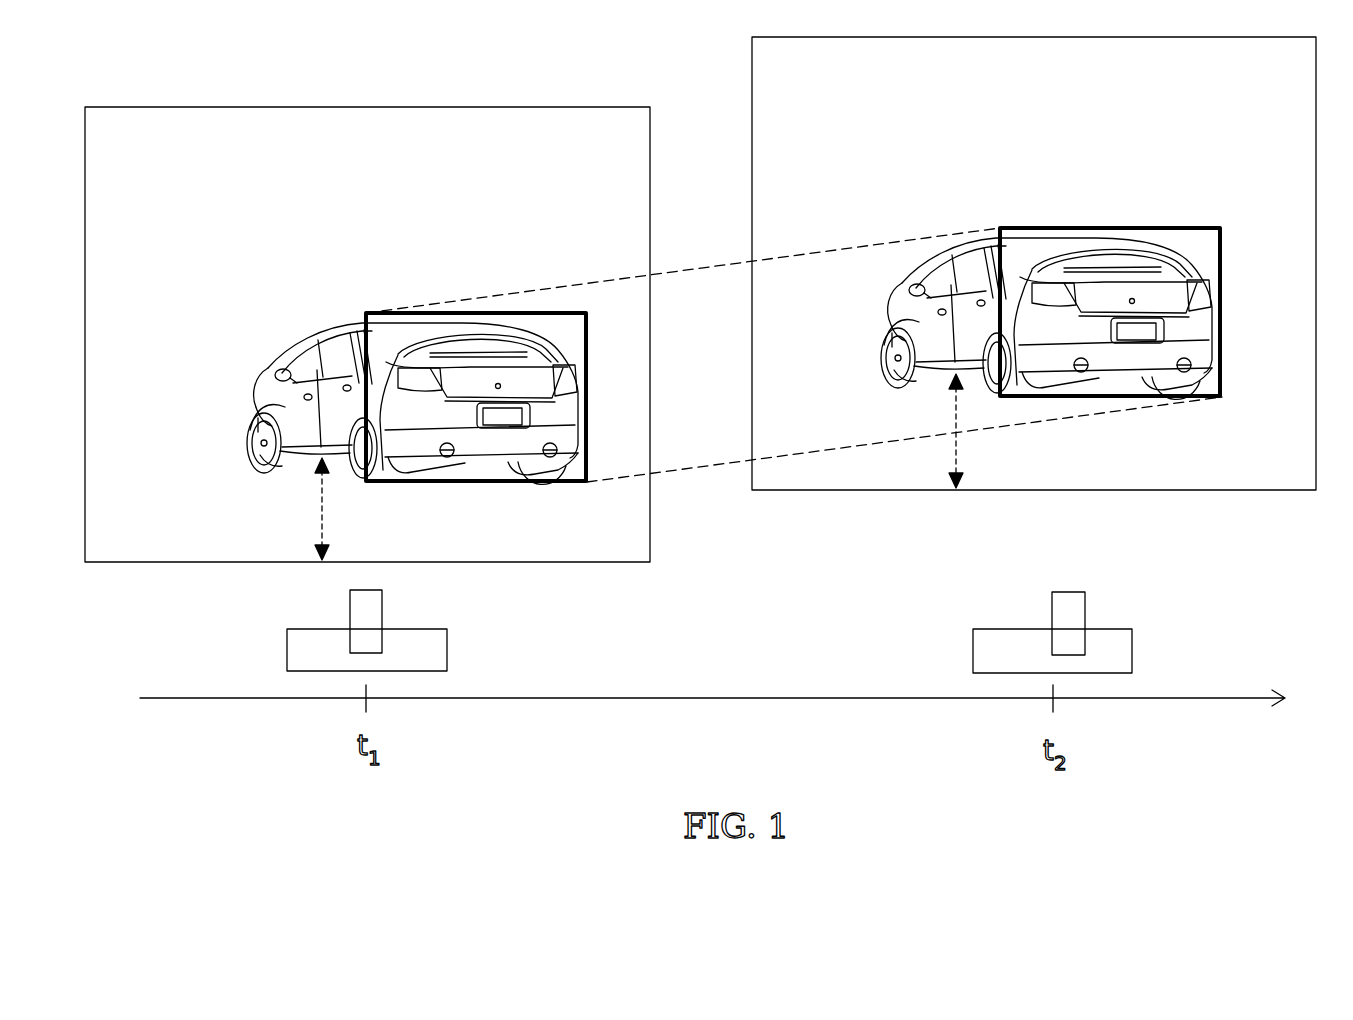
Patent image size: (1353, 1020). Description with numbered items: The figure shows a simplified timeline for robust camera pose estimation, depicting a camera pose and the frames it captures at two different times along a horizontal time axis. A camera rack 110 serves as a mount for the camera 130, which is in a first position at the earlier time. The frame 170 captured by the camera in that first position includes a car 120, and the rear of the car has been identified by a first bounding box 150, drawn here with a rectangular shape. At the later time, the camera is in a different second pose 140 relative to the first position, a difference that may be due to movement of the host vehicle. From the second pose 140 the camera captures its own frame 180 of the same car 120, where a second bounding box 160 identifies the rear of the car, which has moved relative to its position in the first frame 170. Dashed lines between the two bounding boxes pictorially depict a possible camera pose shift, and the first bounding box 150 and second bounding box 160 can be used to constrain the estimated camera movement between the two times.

The camera rack 110 is at (447, 650).
The car 120 is at (320, 331).
The camera 130 is at (382, 605).
The second pose 140 is at (1085, 605).
The first bounding box 150 is at (455, 482).
The second bounding box 160 is at (1085, 398).
The frame 170 is at (88, 190).
The frame 180 is at (755, 107).